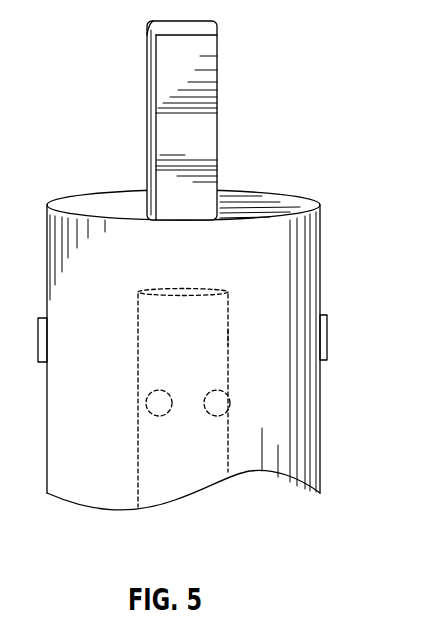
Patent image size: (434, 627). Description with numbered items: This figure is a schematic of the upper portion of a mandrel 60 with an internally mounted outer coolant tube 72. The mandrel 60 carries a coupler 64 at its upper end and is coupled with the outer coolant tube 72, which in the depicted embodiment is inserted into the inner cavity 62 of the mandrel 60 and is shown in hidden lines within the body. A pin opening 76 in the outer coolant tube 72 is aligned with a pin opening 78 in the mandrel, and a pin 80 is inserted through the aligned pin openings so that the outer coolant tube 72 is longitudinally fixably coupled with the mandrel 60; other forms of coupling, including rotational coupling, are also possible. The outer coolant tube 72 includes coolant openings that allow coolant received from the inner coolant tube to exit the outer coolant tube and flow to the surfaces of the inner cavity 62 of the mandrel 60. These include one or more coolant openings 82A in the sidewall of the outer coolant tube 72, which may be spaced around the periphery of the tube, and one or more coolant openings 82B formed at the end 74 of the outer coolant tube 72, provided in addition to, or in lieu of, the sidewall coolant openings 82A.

The mandrel 60 is at (320, 212).
The inner cavity 62 is at (296, 516).
The coupler 64 is at (218, 30).
The outer coolant tube 72 is at (229, 327).
The end of the outer coolant tube 74 is at (224, 290).
The pin opening 76 is at (229, 336).
The pin opening 78 is at (323, 316).
The pin 80 is at (327, 340).
The coolant openings 82A is at (228, 403).
The coolant openings 82B is at (182, 289).